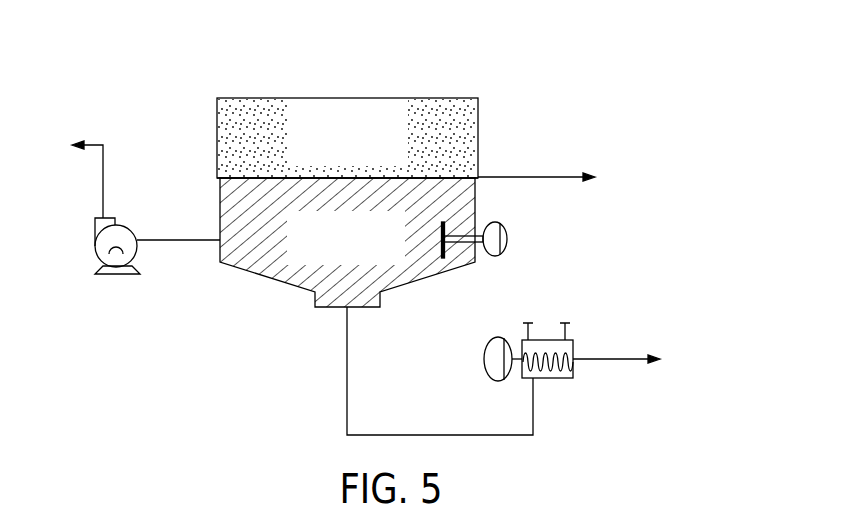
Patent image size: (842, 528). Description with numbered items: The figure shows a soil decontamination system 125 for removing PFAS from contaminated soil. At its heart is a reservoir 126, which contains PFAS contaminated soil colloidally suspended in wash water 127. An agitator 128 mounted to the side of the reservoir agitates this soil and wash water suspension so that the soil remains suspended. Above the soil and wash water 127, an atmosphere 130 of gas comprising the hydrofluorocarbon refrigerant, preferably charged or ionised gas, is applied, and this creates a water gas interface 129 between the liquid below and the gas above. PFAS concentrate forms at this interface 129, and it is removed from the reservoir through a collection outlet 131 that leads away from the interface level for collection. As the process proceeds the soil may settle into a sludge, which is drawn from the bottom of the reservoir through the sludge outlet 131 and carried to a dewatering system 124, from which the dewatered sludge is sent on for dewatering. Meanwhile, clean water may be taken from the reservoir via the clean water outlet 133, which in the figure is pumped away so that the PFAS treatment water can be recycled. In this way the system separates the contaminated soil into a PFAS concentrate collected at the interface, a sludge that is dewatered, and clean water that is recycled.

The dewatering system 124 is at (584, 320).
The soil decontamination system 125 is at (700, 65).
The reservoir 126 is at (240, 268).
The wash water 127 is at (220, 215).
The agitator 128 is at (506, 242).
The water gas interface 129 is at (440, 176).
The atmosphere 130 is at (421, 130).
The collection outlet 131 is at (500, 177).
The clean water outlet 133 is at (166, 243).